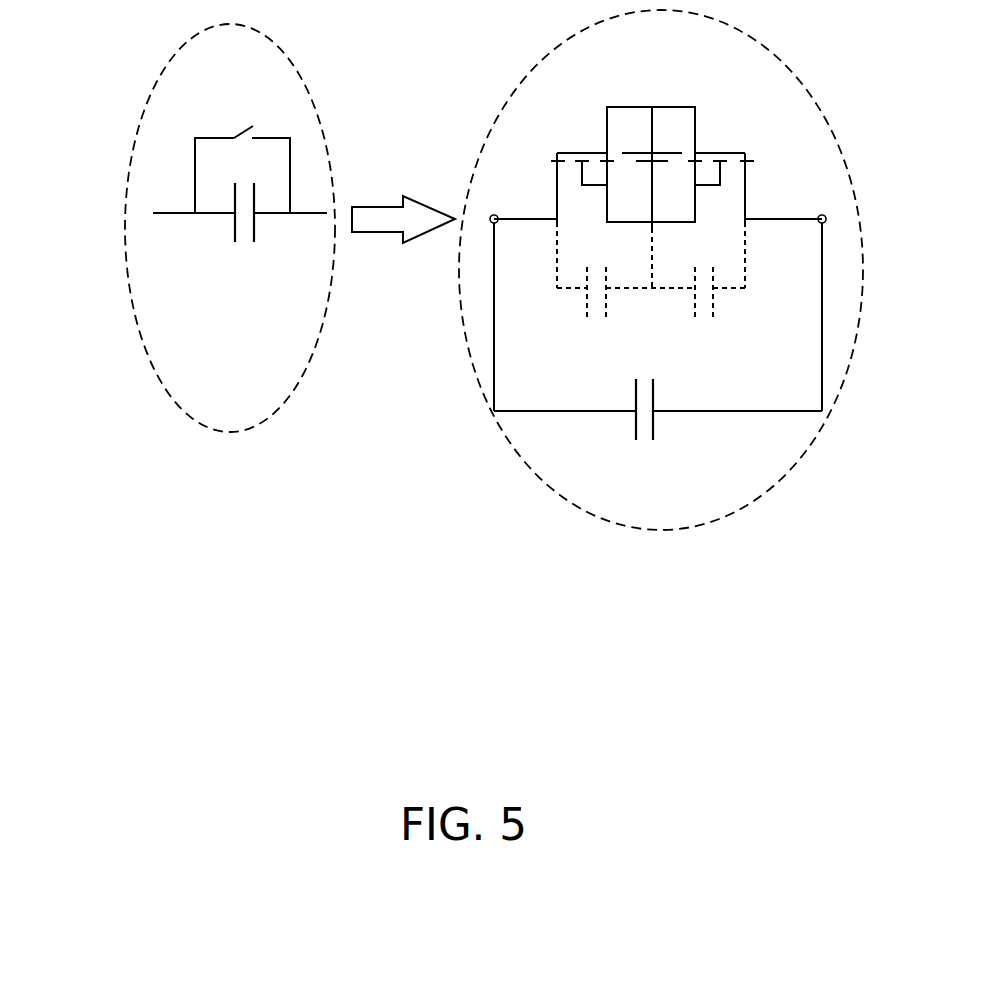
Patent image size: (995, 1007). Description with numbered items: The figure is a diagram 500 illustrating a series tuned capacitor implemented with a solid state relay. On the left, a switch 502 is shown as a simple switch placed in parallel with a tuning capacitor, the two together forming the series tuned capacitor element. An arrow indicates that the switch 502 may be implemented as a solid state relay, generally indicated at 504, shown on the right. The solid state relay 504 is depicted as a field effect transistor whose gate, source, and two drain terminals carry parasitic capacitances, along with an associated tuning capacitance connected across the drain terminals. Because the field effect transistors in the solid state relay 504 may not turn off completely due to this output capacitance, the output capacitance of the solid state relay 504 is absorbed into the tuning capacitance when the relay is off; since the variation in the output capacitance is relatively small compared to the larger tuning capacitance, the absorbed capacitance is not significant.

The circuit model diagram 500 is at (486, 790).
The switch 502 is at (152, 88).
The solid state relay 504 is at (520, 78).